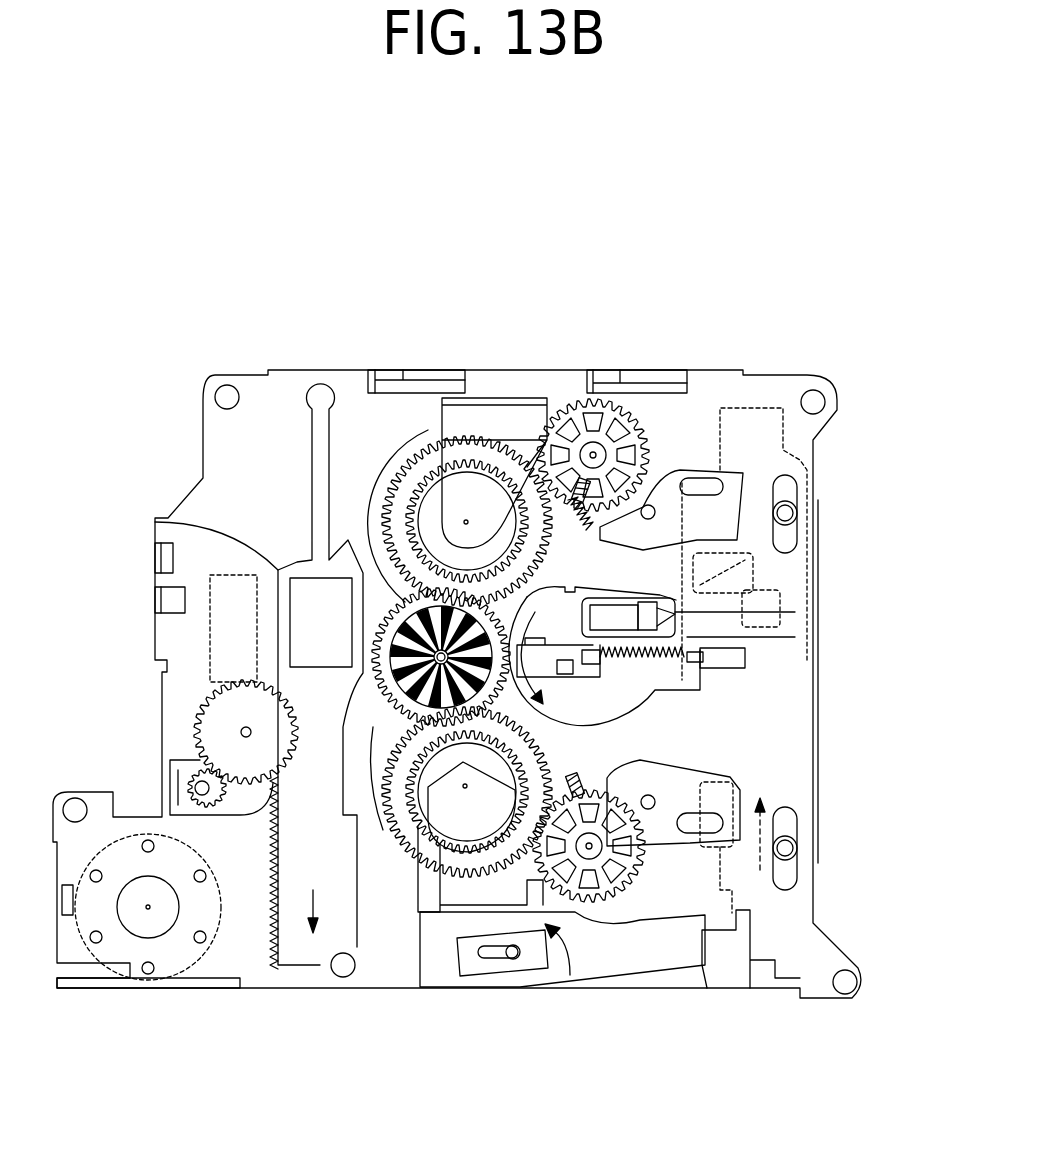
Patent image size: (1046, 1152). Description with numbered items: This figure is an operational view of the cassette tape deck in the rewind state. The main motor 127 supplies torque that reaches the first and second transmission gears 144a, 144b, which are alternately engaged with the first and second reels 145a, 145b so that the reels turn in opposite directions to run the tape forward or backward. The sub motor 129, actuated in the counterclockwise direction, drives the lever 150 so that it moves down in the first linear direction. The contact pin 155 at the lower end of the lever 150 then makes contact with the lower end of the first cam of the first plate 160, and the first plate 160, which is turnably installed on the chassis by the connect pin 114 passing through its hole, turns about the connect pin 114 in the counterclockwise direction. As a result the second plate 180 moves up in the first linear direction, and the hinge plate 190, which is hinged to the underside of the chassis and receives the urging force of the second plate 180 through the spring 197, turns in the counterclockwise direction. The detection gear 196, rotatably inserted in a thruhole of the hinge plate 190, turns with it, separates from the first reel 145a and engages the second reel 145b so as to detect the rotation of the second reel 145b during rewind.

The connect pin 114 is at (513, 953).
The main motor 127 is at (187, 965).
The sub motor 129 is at (210, 643).
The first transmission gear 144a is at (567, 405).
The second transmission gear 144b is at (640, 878).
The first reel 145a is at (418, 483).
The second reel 145b is at (403, 838).
The lever 150 is at (155, 522).
The contact pin 155 is at (332, 972).
The first plate 160 is at (613, 958).
The second plate 180 is at (813, 925).
The hinge plate 190 is at (612, 716).
The detection gear 196 is at (392, 620).
The spring 197 is at (760, 613).